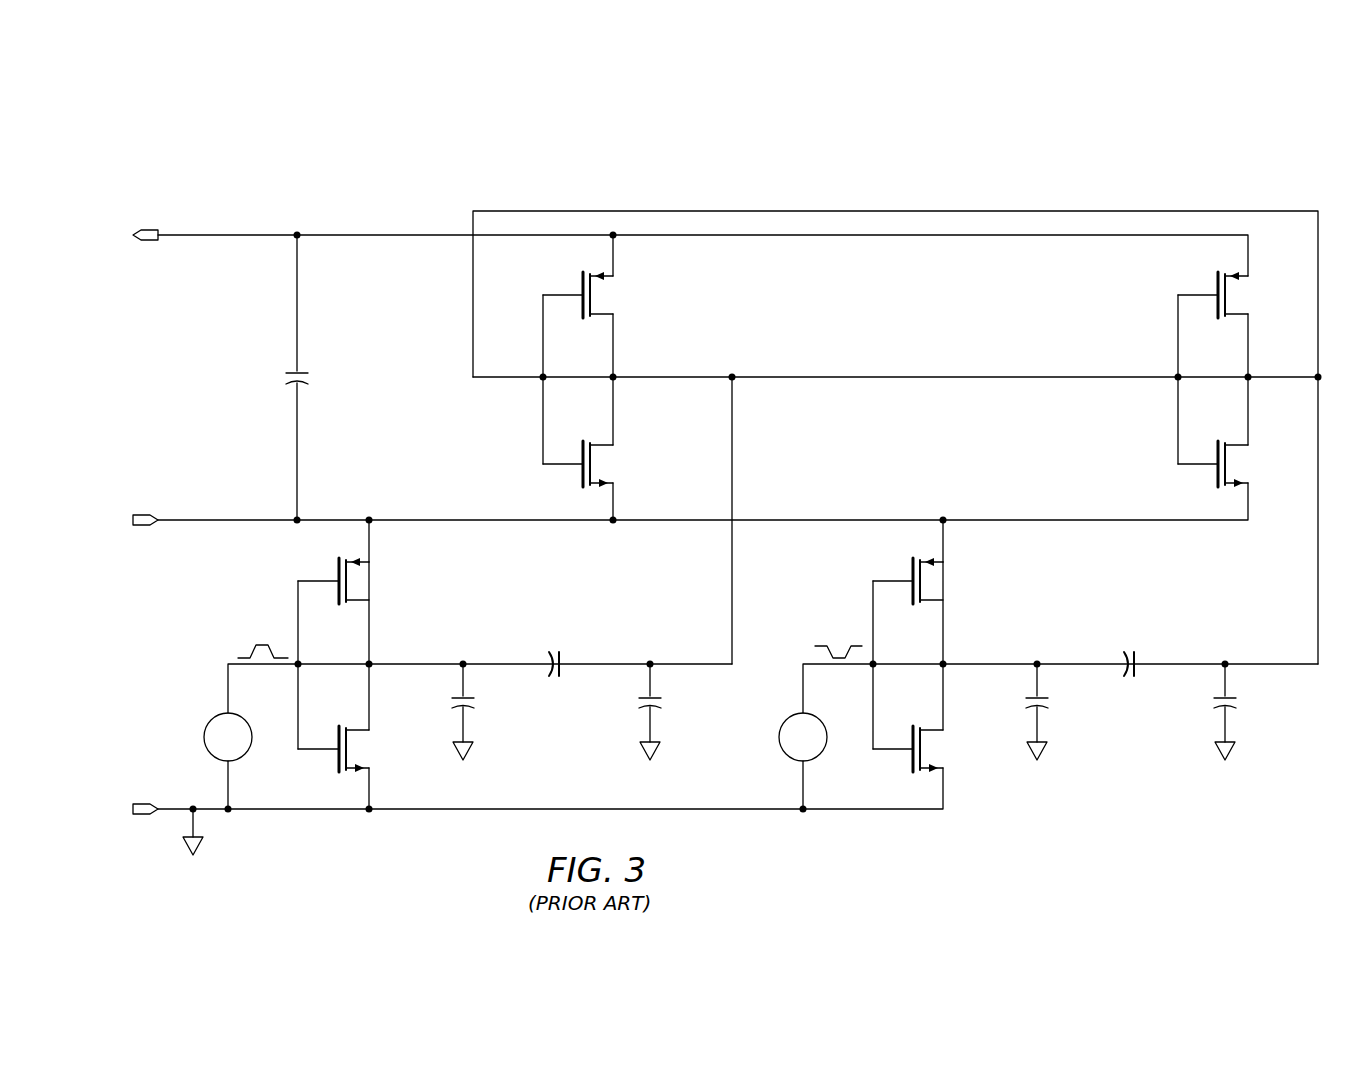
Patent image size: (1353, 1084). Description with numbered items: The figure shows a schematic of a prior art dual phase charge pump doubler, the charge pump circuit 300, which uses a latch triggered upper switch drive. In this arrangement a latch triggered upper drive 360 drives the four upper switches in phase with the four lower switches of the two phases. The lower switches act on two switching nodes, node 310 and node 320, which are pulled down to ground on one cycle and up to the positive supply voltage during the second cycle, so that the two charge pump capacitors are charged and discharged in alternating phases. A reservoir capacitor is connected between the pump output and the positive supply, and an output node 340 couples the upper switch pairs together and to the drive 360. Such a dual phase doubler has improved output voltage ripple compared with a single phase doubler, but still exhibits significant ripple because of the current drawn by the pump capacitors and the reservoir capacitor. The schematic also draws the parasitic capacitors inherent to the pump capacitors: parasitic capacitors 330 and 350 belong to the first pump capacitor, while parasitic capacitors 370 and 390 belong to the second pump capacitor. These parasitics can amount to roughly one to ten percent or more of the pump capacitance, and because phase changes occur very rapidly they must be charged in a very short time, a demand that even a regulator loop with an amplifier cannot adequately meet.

The charge pump circuit 300 is at (970, 148).
The node 310 is at (363, 668).
The node 320 is at (938, 668).
The parasitic capacitor 330 is at (476, 701).
The output node 340 is at (620, 380).
The parasitic capacitor 350 is at (663, 701).
The latch triggered upper drive 360 is at (790, 210).
The parasitic capacitor 370 is at (1050, 701).
The parasitic capacitor 390 is at (1238, 701).